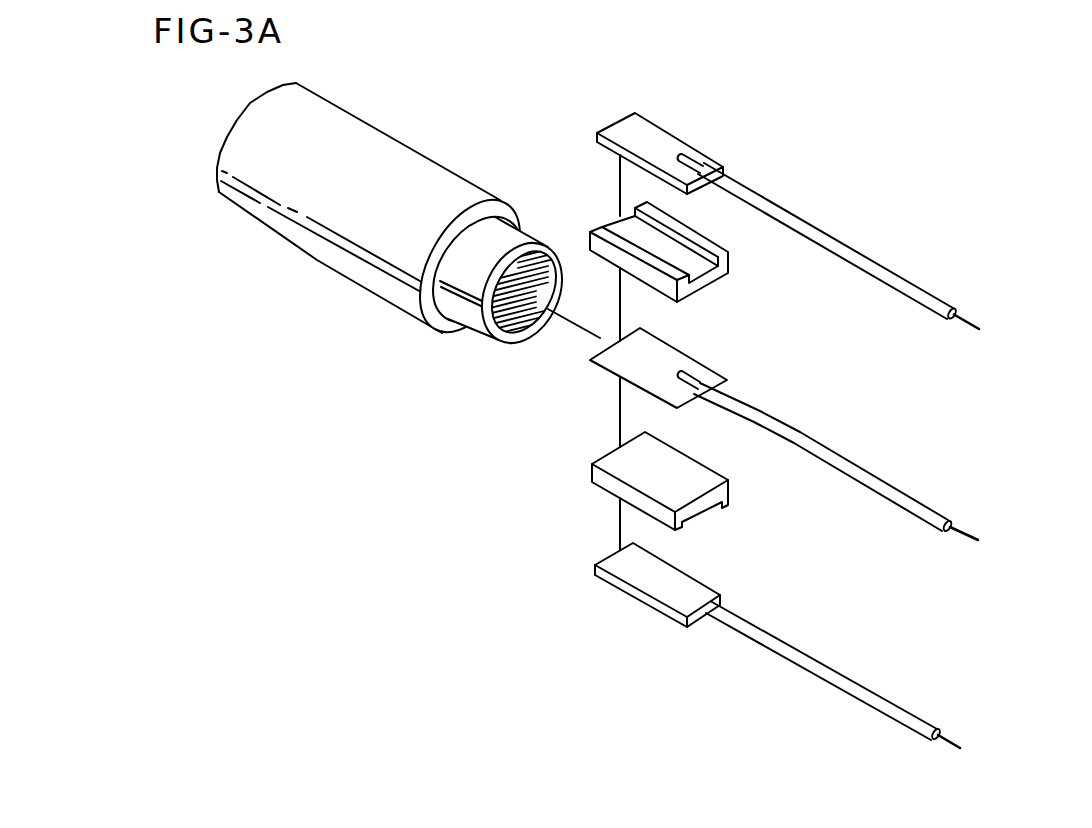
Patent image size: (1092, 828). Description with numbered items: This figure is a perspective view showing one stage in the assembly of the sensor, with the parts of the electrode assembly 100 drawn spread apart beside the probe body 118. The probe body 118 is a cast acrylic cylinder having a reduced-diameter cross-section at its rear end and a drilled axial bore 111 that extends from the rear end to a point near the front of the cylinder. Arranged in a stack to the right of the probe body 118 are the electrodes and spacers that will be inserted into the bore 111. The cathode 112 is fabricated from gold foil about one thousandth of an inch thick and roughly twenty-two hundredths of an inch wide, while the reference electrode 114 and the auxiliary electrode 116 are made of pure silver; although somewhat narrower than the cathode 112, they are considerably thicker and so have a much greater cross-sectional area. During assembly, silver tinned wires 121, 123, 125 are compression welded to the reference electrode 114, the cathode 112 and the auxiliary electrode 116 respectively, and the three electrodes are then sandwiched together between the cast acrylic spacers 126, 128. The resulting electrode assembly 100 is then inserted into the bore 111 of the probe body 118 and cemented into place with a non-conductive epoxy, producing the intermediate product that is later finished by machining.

The sensor assembly 100 is at (558, 204).
The probe body 118 is at (333, 270).
The axial bore 111 is at (523, 334).
The reference electrode 114 is at (680, 137).
The silver tinned wire 121 is at (892, 270).
The cast acrylic spacer 128 is at (748, 283).
The cathode 112 is at (677, 360).
The silver tinned wire 123 is at (885, 482).
The cast acrylic spacer 126 is at (695, 490).
The auxiliary electrode 116 is at (690, 593).
The silver tinned wire 125 is at (867, 688).